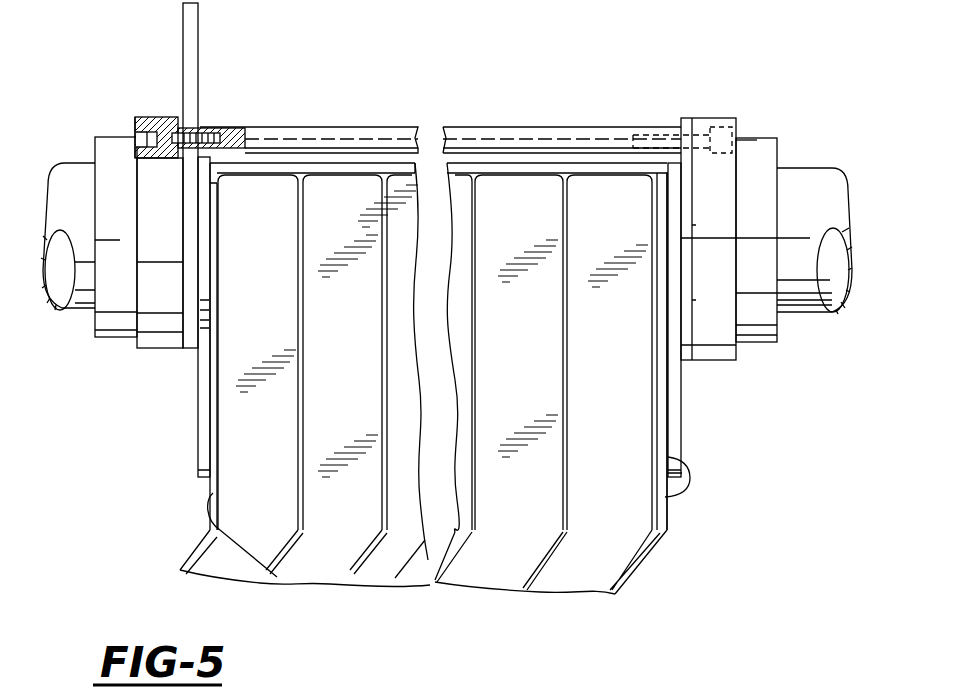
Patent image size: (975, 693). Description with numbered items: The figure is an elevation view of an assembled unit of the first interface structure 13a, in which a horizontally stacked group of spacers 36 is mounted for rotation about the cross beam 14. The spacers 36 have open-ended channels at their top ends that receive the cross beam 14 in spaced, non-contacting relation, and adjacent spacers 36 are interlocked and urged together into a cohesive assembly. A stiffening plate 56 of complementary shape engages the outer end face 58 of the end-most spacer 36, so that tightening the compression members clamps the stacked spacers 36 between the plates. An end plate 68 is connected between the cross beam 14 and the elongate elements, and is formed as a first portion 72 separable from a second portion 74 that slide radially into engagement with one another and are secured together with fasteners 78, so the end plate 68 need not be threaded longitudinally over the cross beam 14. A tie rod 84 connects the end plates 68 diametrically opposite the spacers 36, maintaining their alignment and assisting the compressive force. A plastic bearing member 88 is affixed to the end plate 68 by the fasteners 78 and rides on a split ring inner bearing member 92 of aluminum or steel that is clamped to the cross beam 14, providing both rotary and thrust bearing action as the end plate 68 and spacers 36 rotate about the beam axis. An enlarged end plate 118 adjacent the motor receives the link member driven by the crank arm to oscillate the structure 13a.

The first interface structure 13a is at (590, 606).
The cross beam 14 is at (820, 178).
The spacer 36 is at (637, 513).
The stiffening plate 56 is at (187, 553).
The outer end face 58 is at (268, 572).
The end plate 68 is at (186, 465).
The first portion 72 is at (183, 108).
The second portion 74 is at (198, 425).
The fastener 78 is at (137, 135).
The tie rod 84 is at (498, 128).
The plastic bearing member 88 is at (150, 337).
The split ring inner bearing member 92 is at (108, 317).
The enlarged end plate 118 is at (198, 58).